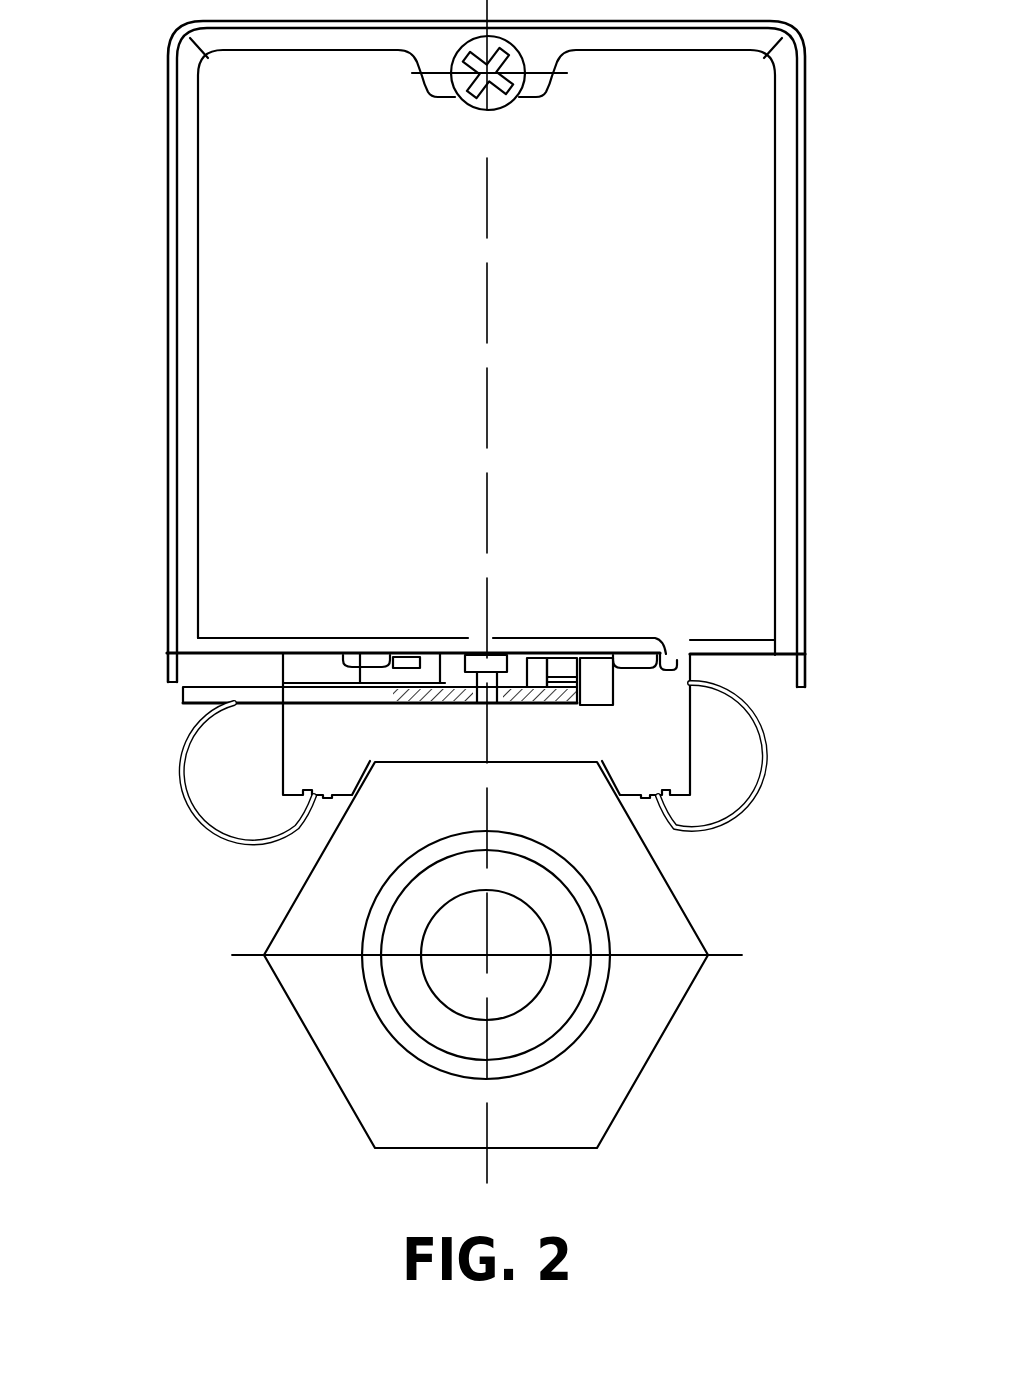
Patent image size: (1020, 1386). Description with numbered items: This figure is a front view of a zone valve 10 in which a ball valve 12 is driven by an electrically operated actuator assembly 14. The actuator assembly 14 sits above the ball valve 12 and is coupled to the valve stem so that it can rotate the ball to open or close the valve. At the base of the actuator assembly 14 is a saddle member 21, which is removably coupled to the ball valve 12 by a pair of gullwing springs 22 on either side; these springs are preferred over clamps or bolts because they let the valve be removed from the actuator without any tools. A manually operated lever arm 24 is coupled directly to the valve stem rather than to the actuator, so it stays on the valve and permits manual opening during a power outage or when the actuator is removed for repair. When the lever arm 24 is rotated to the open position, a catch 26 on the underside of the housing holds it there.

The zone valve 10 is at (102, 188).
The ball valve 12 is at (697, 913).
The actuator assembly 14 is at (816, 326).
The saddle member 21 is at (663, 757).
The gullwing springs 22 is at (231, 805).
The lever arm 24 is at (202, 693).
The catch 26 is at (677, 667).